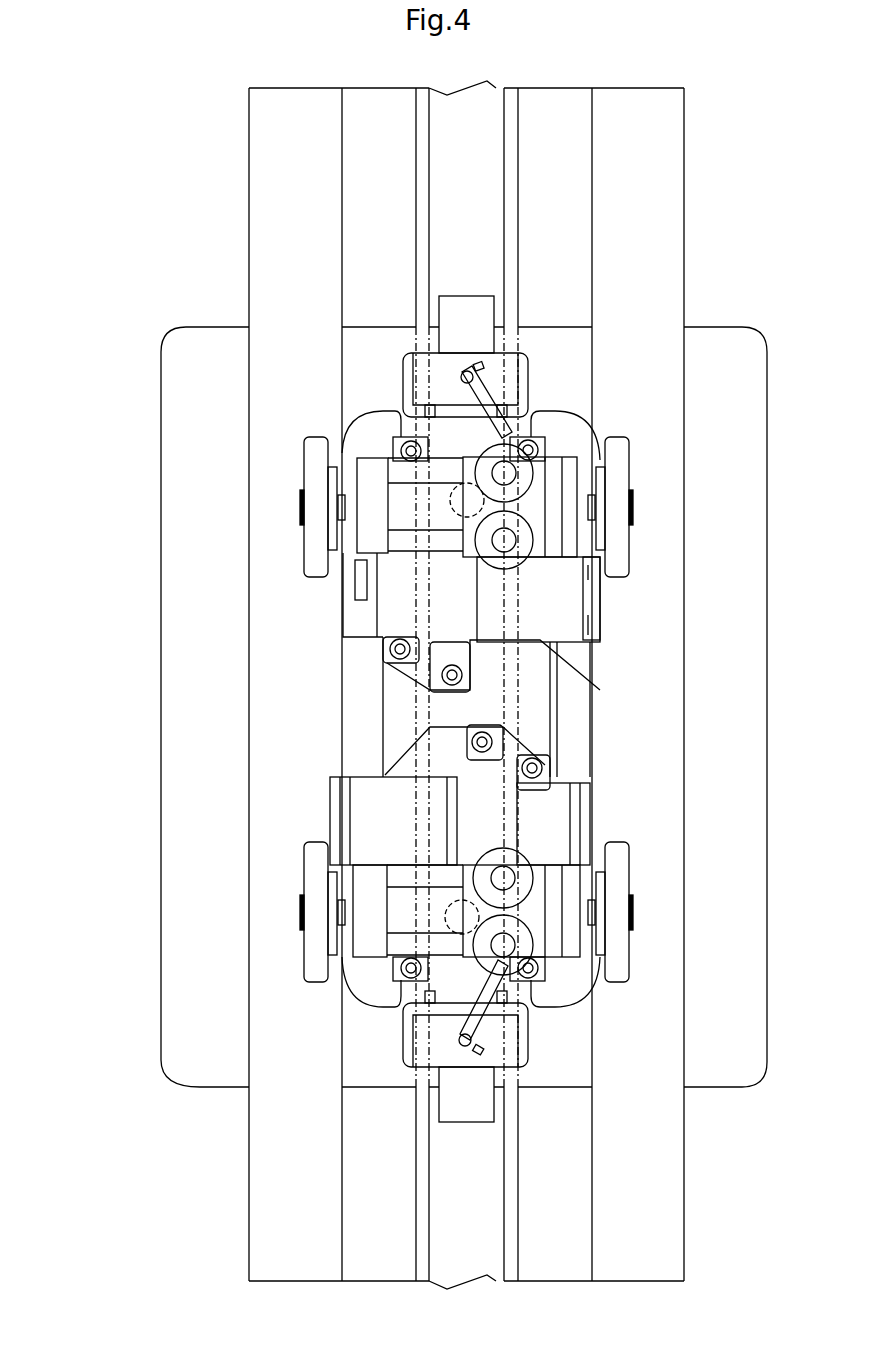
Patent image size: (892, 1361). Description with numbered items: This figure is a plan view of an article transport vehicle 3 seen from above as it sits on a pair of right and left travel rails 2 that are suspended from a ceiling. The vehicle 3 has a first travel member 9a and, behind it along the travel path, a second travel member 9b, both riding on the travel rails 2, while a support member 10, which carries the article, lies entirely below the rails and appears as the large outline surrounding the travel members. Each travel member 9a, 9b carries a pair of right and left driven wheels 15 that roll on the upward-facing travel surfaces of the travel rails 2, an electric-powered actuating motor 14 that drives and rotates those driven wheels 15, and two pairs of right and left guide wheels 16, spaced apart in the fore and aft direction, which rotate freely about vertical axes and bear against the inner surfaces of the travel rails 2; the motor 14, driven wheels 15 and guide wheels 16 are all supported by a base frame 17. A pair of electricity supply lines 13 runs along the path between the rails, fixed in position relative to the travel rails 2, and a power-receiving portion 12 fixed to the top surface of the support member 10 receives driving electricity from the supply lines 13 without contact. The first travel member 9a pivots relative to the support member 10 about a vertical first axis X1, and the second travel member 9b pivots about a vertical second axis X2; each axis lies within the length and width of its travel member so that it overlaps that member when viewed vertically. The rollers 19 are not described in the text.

The travel rail 2 is at (263, 202).
The article transport vehicle 3 is at (135, 965).
The first travel member 9a is at (388, 347).
The second travel member 9b is at (372, 1063).
The support member 10 is at (190, 636).
The power-receiving portion 12 is at (538, 715).
The electricity supply line 13 is at (423, 197).
The actuating motor 14 is at (572, 593).
The driven wheel 15 is at (313, 477).
The guide wheel 16 is at (373, 433).
The base frame 17 is at (540, 657).
The guide wheel 19 is at (523, 533).
The first axis X1 is at (455, 505).
The second axis X2 is at (455, 905).